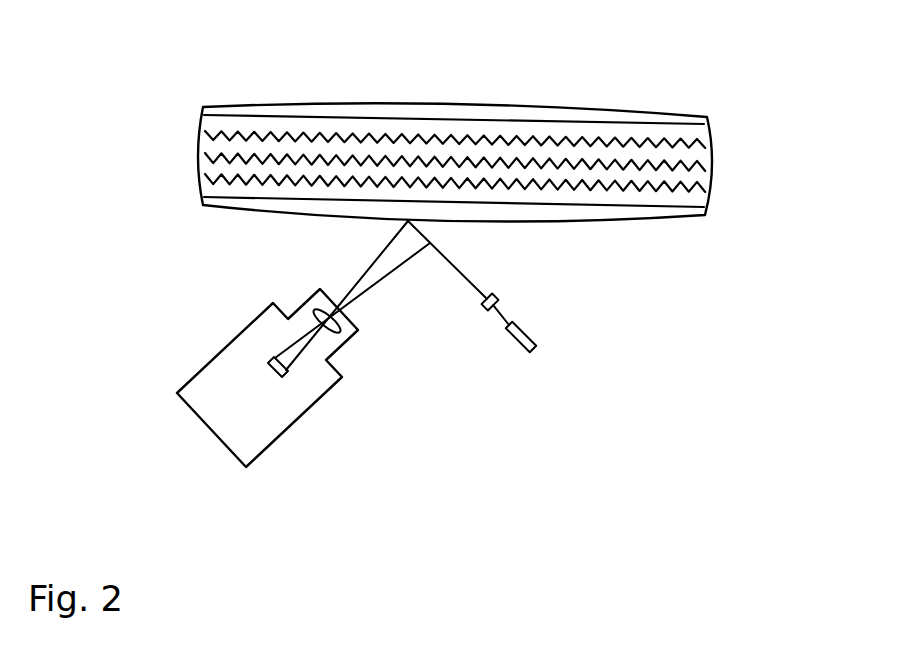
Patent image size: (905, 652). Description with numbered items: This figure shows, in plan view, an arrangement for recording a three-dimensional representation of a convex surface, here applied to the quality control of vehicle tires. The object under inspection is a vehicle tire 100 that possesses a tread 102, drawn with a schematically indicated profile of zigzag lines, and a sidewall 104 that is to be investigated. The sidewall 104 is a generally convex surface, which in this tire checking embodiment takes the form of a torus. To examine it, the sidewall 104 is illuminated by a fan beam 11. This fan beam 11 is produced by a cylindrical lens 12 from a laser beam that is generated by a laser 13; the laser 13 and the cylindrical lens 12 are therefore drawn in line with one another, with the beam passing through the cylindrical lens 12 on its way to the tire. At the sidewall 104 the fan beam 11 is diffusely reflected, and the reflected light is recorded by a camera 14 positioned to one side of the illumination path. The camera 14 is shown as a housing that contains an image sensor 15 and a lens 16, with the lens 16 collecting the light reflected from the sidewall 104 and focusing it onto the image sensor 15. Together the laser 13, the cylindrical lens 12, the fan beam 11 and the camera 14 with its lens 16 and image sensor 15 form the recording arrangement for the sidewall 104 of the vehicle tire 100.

The vehicle tire 100 is at (562, 105).
The tread 102 is at (697, 158).
The sidewall 104 is at (650, 212).
The fan beam 11 is at (470, 283).
The cylindrical lens 12 is at (500, 297).
The laser 13 is at (532, 337).
The camera 14 is at (262, 455).
The image sensor 15 is at (283, 376).
The lens 16 is at (337, 333).